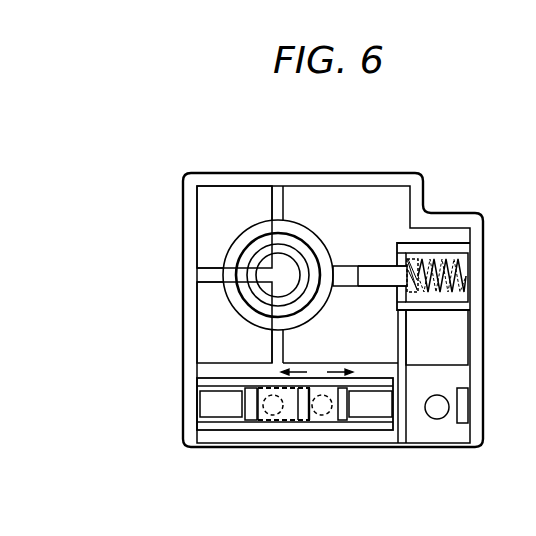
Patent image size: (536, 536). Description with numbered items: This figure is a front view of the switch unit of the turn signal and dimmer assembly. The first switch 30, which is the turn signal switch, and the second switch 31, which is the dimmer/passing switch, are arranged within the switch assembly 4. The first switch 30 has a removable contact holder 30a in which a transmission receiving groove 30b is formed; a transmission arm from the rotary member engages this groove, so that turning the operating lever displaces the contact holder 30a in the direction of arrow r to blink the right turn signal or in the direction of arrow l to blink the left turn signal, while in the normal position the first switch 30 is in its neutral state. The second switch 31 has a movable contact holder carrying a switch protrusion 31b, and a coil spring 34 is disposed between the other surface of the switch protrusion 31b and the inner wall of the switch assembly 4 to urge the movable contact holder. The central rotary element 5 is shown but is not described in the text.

The switch assembly 4 is at (372, 173).
The rotor / rotary member 5 is at (242, 274).
The second switch 31 is at (372, 266).
The switch protrusion 31b is at (382, 287).
The coil spring 34 is at (456, 290).
The first switch 30 is at (290, 421).
The removable contact holder 30a is at (262, 393).
The transmission receiving groove 30b is at (265, 420).